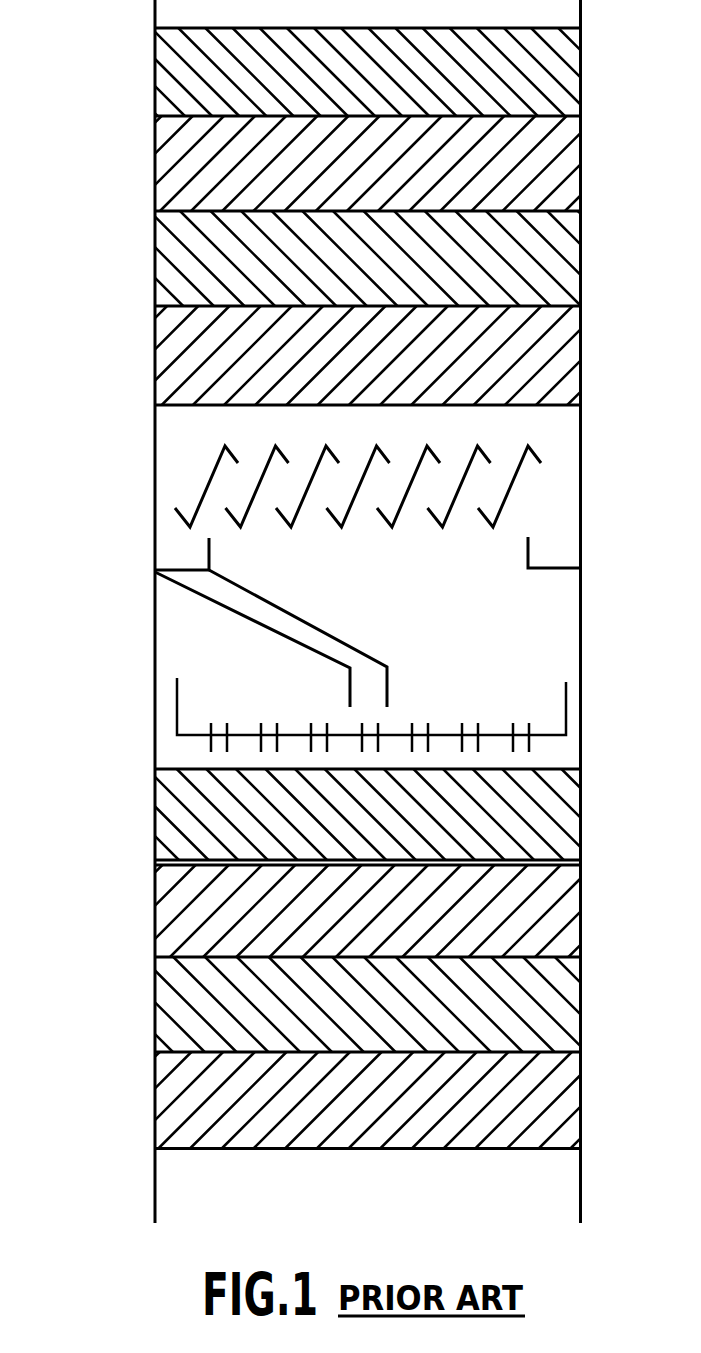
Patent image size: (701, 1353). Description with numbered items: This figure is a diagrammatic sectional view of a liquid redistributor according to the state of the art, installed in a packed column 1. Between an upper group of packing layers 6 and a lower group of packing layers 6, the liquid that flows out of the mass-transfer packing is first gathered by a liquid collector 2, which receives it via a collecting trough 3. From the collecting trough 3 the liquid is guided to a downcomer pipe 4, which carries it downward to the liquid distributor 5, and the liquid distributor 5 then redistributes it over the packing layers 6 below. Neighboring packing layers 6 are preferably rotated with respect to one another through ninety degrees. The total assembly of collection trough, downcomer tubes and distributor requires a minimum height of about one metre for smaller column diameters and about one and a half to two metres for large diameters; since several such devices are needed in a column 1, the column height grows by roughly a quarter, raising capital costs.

The column 1 is at (155, 83).
The liquid collector 2 is at (205, 490).
The collecting trough 3 is at (167, 573).
The downcomer pipe 4 is at (350, 688).
The liquid distributor 5 is at (197, 745).
The packing layers 6 is at (185, 262).